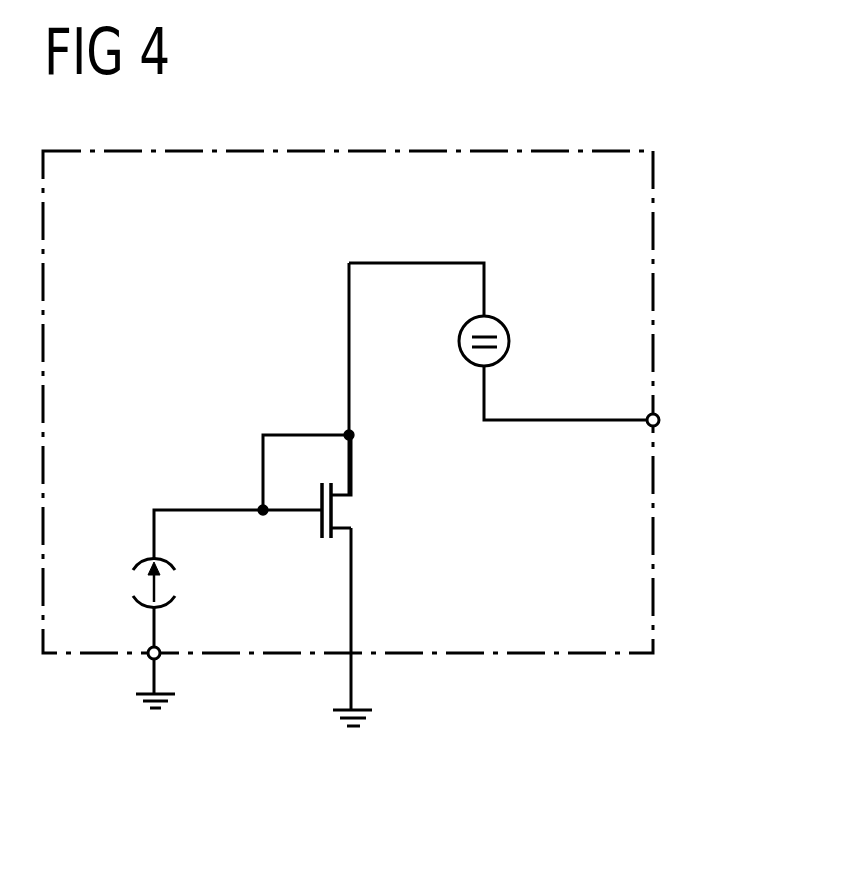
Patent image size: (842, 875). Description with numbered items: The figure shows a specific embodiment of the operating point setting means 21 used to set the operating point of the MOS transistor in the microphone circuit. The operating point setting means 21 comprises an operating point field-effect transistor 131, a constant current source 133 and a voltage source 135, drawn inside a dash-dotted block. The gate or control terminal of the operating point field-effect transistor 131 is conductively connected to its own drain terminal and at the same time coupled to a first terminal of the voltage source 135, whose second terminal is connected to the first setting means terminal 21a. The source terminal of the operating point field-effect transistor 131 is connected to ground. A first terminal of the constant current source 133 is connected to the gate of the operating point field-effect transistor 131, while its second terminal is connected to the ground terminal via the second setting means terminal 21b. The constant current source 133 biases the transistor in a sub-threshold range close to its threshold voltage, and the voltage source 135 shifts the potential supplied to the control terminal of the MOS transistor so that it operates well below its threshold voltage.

The operating point setting means 21 is at (360, 150).
The first setting means terminal 21a is at (660, 421).
The second setting means terminal 21b is at (147, 660).
The operating point field-effect transistor 131 is at (335, 506).
The constant current source 133 is at (182, 580).
The voltage source 135 is at (510, 338).